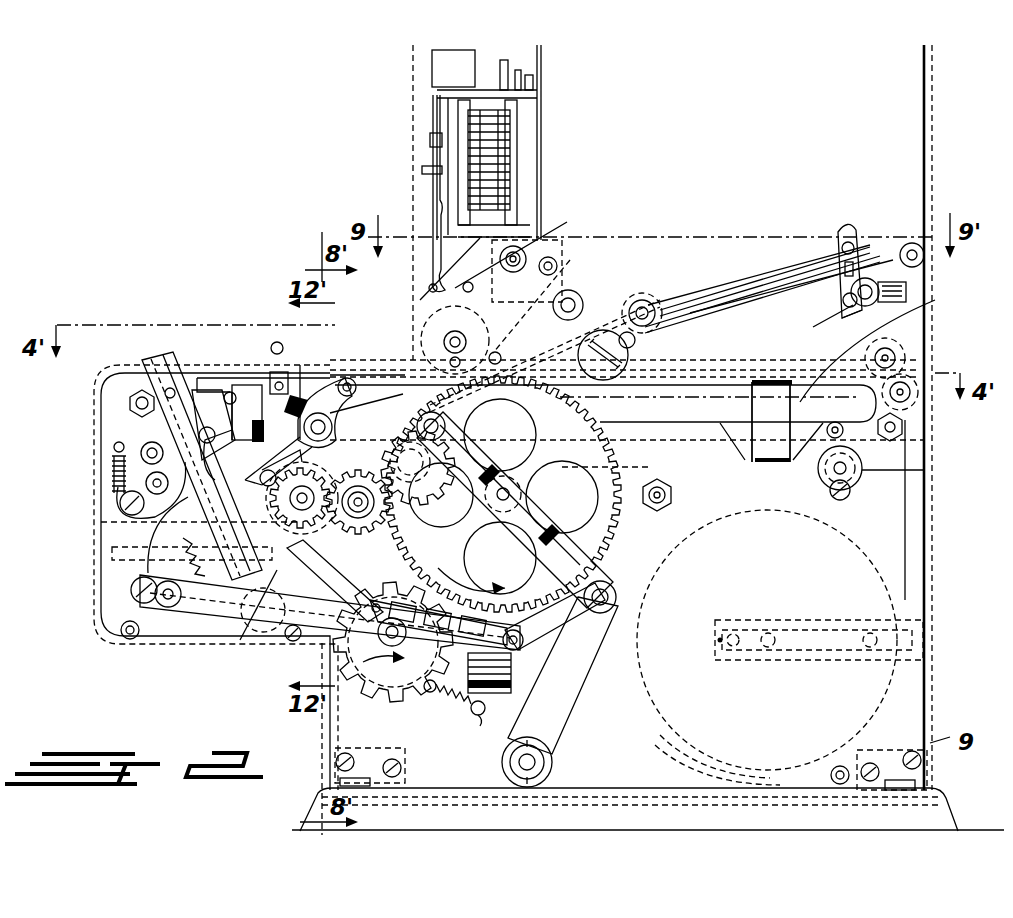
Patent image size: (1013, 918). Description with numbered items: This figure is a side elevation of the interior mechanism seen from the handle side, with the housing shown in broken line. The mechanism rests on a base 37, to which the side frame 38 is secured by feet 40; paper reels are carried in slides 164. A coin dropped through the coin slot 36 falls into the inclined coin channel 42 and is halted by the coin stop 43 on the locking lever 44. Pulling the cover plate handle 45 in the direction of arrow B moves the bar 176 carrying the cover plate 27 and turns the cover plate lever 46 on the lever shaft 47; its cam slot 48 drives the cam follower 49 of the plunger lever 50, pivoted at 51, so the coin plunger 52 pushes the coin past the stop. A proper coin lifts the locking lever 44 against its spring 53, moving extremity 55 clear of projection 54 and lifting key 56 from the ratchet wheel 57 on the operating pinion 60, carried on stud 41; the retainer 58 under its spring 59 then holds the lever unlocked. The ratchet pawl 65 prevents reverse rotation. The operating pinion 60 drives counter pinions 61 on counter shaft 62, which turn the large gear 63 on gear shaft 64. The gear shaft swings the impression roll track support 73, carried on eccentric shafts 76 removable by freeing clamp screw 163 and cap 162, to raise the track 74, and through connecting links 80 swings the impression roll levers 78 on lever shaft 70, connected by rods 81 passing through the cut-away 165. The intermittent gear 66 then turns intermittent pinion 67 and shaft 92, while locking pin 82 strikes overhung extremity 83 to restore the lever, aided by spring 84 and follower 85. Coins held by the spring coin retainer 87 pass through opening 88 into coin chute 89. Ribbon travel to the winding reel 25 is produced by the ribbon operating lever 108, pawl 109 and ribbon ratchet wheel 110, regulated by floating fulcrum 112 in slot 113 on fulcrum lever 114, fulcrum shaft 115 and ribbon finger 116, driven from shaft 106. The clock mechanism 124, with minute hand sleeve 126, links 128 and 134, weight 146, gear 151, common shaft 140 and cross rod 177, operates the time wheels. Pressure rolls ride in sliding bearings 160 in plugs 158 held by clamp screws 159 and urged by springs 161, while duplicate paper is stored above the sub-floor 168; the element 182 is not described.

The weight 146 is at (447, 61).
The clock mechanism 124 is at (490, 150).
The minute hand sleeve 126 is at (437, 123).
The link 128 is at (440, 196).
The link 134 is at (432, 199).
The common shaft 140 is at (437, 278).
The cross rod 177 is at (525, 256).
The gear 151 is at (480, 285).
The shaft of the duplicate driving roll 106 is at (572, 298).
The connecting rod 81 is at (447, 336).
The sliding bearings 160 is at (580, 300).
The fulcrum shaft 115 is at (650, 300).
The springs 161 is at (628, 268).
The plug 158 is at (610, 355).
The clamp screw 159 is at (786, 306).
The sub-floor 168 is at (757, 277).
The cut-away 165 is at (905, 318).
The fulcrum lever 114 is at (760, 327).
The slot 113 is at (822, 310).
The floating fulcrum 112 is at (848, 305).
The ribbon finger 116 is at (850, 236).
The ribbon operating lever 108 is at (858, 242).
The pawl 109 is at (870, 245).
The ribbon ratchet wheel 110 is at (918, 258).
The knob 182 is at (903, 293).
The ribbon winding reel 25 is at (913, 280).
The eccentric shafts 76 is at (856, 463).
The cap 162 is at (926, 473).
The clamp screw 163 is at (851, 493).
The side frame 38 is at (883, 527).
The slides 164 is at (850, 622).
The intermittent gear 66 is at (672, 494).
The gear shaft 64 is at (620, 468).
The impression roll track 74 is at (747, 465).
The impression roll track support 73 is at (788, 468).
The retainer 58 is at (417, 560).
The large gear 63 is at (610, 522).
The connecting links 80 is at (598, 540).
The lever shaft 47 is at (385, 555).
The counter pinions 61 is at (366, 515).
The counter shaft 62 is at (385, 498).
The stud 41 is at (352, 472).
The ratchet wheel 57 is at (328, 365).
The cover plate 27 is at (382, 412).
The extremity 55 is at (275, 384).
The projection 54 is at (276, 383).
The cover plate lever 46 is at (231, 428).
The cover plate handle 45 is at (270, 340).
The arrow B is at (272, 345).
The bar 176 is at (297, 365).
The projecting key 56 is at (262, 476).
The coin slot 36 is at (148, 357).
The follower 85 is at (150, 460).
The spring 84 is at (113, 466).
The cam slot 48 is at (175, 470).
The cam follower 49 is at (150, 485).
The pivot 51 is at (128, 518).
The plunger lever 50 is at (157, 550).
The spring 53 is at (140, 590).
The locking lever 44 is at (257, 565).
The coin plunger 52 is at (193, 597).
The coin stop 43 is at (241, 620).
The operating pinion 60 is at (263, 633).
The ratchet pawl 65 is at (287, 550).
The overhung extremity 83 is at (322, 647).
The locking pin 82 is at (360, 665).
The intermittent pinion 67 is at (388, 687).
The shaft 92 is at (428, 688).
The spring 59 is at (473, 712).
The coin chute 89 is at (512, 690).
The opening 88 is at (512, 660).
The coin channel 42 is at (520, 640).
The lever shaft 70 is at (535, 760).
The impression roll levers 78 is at (590, 624).
The spring coin retainer 87 is at (525, 638).
The feet 40 is at (930, 777).
The base 37 is at (945, 815).